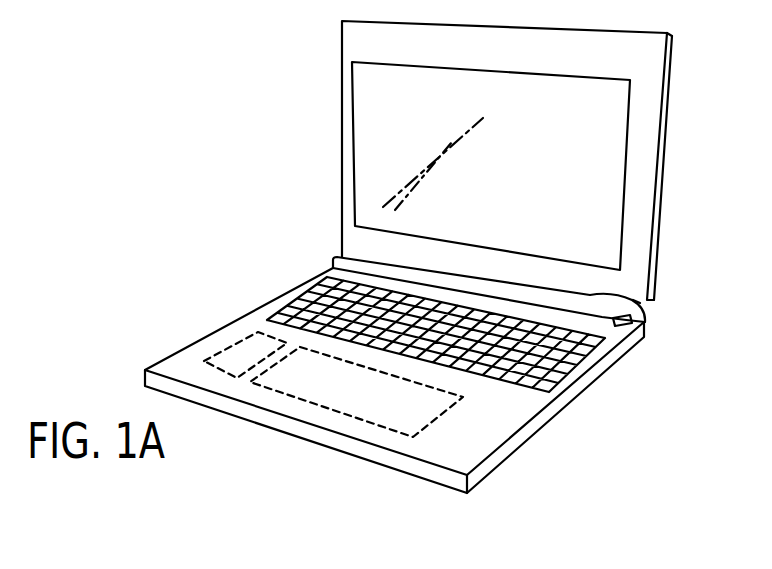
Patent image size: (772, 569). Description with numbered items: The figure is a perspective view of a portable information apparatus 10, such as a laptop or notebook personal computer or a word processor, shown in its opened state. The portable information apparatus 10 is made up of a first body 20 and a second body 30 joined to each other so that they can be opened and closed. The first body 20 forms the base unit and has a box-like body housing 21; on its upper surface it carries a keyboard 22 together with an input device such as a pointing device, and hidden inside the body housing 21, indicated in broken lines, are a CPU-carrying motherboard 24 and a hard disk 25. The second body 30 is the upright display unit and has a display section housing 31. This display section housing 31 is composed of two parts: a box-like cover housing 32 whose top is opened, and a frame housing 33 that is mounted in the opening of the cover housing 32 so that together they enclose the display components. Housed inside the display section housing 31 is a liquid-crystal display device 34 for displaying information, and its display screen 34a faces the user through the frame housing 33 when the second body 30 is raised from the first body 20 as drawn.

The portable information apparatus 10 is at (580, 393).
The first body 20 is at (247, 412).
The body housing 21 is at (437, 457).
The keyboard 22 is at (312, 300).
The motherboard 24 is at (348, 418).
The hard disk 25 is at (232, 345).
The second body 30 is at (674, 47).
The display section housing 31 is at (672, 104).
The cover housing 32 is at (668, 148).
The frame housing 33 is at (357, 47).
The liquid-crystal display device 34 is at (608, 227).
The display screen 34a is at (618, 180).